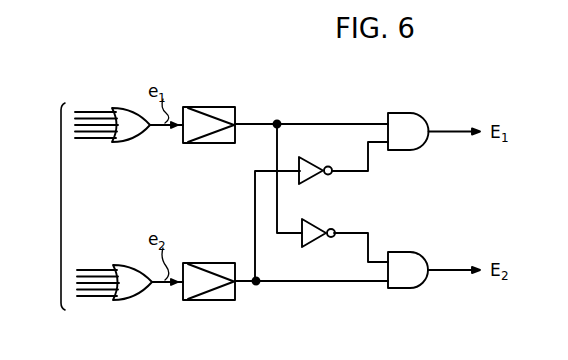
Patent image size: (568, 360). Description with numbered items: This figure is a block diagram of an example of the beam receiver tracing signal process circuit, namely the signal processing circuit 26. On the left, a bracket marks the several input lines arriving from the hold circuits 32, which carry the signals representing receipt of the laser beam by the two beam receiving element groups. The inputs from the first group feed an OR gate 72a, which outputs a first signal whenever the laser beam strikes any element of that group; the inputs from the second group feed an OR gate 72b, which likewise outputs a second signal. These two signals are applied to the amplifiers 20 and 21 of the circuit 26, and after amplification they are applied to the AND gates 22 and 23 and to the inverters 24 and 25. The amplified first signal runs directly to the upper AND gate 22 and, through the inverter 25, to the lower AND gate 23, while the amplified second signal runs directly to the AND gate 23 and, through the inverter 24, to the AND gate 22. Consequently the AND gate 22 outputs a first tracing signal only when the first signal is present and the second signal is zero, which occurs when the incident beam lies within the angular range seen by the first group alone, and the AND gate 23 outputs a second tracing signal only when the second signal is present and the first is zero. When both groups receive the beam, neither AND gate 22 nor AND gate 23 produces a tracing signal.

The amplifier 20 is at (217, 107).
The amplifier 21 is at (215, 263).
The AND gate 22 is at (415, 113).
The AND gate 23 is at (412, 252).
The inverter 24 is at (312, 164).
The inverter 25 is at (316, 226).
The signal processing circuit 26 is at (366, 98).
The hold circuits 32 is at (49, 215).
The OR gate 72a is at (125, 107).
The OR gate 72b is at (125, 264).